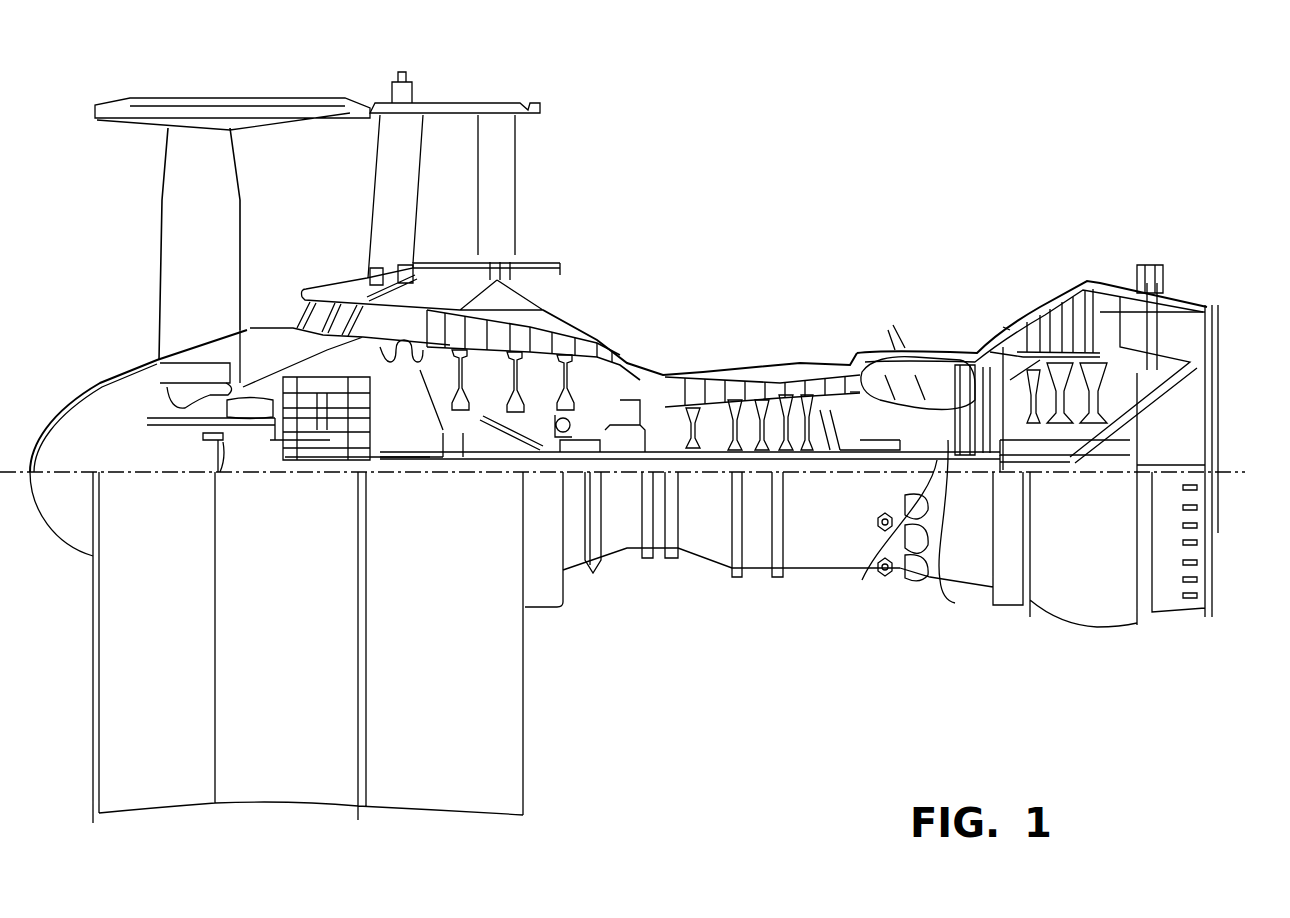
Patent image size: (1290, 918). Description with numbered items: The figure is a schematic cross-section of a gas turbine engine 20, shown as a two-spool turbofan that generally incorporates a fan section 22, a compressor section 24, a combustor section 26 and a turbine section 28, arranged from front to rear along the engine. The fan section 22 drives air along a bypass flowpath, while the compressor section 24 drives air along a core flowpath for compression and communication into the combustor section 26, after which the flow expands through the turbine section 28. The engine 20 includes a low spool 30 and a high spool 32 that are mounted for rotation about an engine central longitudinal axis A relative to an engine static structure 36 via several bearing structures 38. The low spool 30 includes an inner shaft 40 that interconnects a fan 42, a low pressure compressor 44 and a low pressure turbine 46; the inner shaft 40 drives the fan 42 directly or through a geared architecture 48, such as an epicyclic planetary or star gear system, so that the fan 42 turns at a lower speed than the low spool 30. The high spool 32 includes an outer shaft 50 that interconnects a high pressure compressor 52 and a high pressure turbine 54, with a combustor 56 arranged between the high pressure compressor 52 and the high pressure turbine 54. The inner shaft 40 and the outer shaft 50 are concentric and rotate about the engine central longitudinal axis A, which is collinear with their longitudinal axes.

The gas turbine engine 20 is at (972, 172).
The fan section 22 is at (92, 77).
The compressor section 24 is at (790, 222).
The combustor section 26 is at (908, 222).
The turbine section 28 is at (1150, 222).
The low spool 30 is at (608, 426).
The high spool 32 is at (818, 406).
The engine static structure 36 is at (757, 577).
The bearing structures 38 is at (130, 540).
The inner shaft 40 is at (894, 533).
The fan 42 is at (186, 266).
The low pressure compressor 44 is at (542, 325).
The low pressure turbine 46 is at (1068, 314).
The geared architecture 48 is at (322, 428).
The outer shaft 50 is at (955, 603).
The high pressure compressor 52 is at (692, 378).
The high pressure turbine 54 is at (962, 370).
The combustor 56 is at (904, 388).
The engine central longitudinal axis A is at (1232, 472).